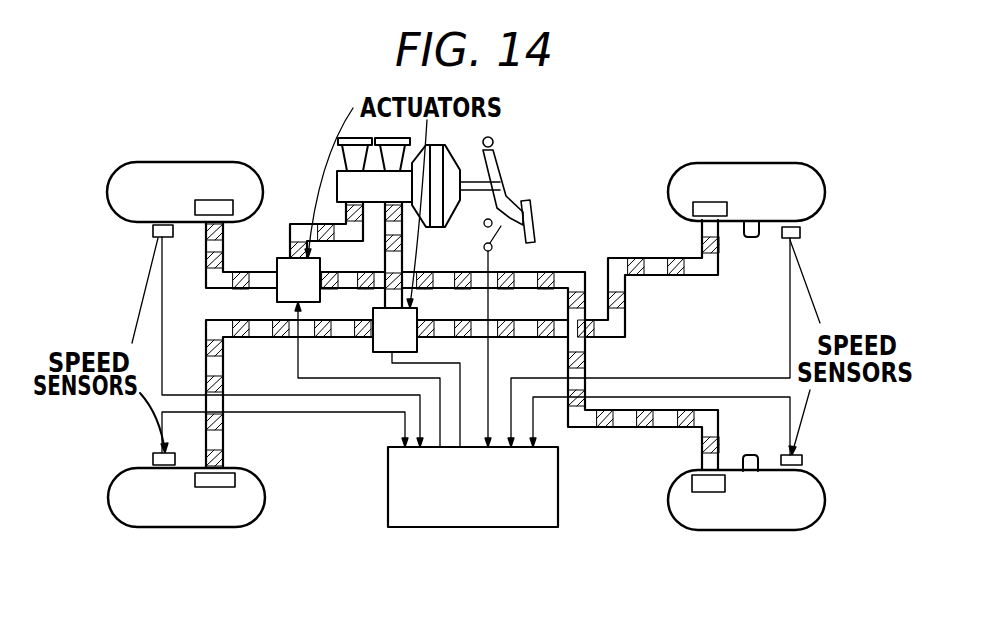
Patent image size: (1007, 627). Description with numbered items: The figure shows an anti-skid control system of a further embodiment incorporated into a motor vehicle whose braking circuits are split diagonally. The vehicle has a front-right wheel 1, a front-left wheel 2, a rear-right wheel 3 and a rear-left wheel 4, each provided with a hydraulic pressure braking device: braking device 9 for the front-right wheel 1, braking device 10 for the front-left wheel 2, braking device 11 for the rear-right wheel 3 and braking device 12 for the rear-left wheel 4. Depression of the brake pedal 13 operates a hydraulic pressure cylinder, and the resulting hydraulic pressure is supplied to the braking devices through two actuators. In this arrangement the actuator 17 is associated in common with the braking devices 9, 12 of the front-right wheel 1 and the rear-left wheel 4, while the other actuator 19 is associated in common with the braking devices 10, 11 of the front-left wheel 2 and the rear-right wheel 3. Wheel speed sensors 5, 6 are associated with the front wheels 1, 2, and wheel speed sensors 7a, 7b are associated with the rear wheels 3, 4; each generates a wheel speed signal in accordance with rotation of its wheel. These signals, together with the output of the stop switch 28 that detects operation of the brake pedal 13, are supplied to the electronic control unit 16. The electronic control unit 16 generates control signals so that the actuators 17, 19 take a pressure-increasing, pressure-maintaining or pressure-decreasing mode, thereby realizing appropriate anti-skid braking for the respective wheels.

The front-right wheel 1 is at (160, 162).
The front-left wheel 2 is at (158, 528).
The rear-right wheel 3 is at (782, 163).
The rear-left wheel 4 is at (770, 530).
The wheel speed sensor 5 is at (153, 238).
The wheel speed sensor 6 is at (152, 455).
The wheel speed sensor 7a is at (795, 240).
The wheel speed sensor 7b is at (795, 454).
The hydraulic pressure braking device 9 is at (216, 200).
The hydraulic pressure braking device 10 is at (213, 488).
The hydraulic pressure braking device 11 is at (708, 202).
The hydraulic pressure braking device 12 is at (703, 492).
The brake pedal 13 is at (500, 167).
The electronic control unit 16 is at (493, 528).
The actuator 17 is at (280, 258).
The actuator 19 is at (372, 352).
The stop switch 28 is at (500, 226).